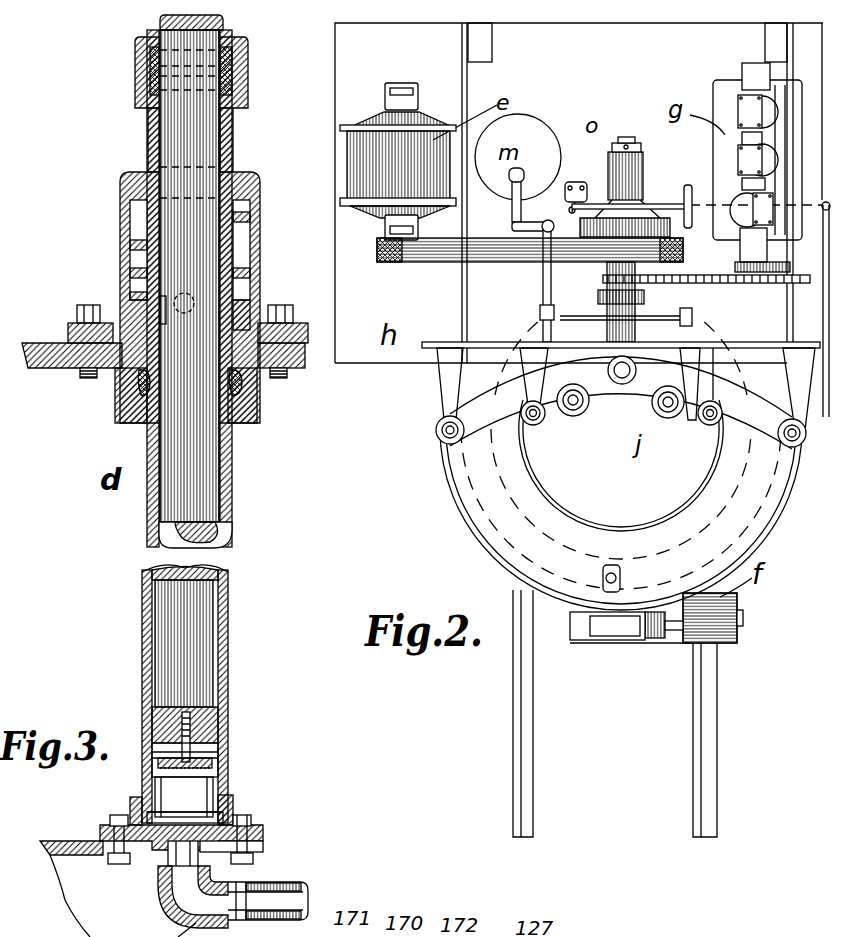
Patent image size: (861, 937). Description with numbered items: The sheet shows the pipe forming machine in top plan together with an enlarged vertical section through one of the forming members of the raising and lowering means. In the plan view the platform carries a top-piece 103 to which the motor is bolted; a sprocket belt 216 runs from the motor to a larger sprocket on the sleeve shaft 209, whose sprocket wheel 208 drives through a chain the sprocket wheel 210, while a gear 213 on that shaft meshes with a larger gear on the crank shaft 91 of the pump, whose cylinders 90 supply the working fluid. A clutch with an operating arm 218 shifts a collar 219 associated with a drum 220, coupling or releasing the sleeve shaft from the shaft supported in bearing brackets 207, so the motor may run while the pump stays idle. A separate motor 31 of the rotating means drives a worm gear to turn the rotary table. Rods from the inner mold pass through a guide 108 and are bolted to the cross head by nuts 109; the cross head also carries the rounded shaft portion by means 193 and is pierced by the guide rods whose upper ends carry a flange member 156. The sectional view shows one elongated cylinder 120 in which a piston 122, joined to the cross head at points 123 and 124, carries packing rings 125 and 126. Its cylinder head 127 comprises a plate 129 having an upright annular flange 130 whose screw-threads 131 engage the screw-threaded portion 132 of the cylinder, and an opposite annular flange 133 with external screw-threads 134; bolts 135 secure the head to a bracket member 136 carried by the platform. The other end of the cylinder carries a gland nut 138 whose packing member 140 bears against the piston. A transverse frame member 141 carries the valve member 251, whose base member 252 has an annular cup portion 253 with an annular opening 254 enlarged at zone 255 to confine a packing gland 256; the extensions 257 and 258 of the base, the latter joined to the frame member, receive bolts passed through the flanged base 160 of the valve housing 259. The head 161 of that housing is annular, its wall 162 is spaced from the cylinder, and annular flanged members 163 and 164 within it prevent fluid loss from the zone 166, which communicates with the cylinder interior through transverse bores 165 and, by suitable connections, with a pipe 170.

In FIG. 2, the top-piece 103 is at (395, 48).
In FIG. 2, the sprocket belt 216 is at (447, 256).
In FIG. 2, the drum 220 is at (560, 192).
In FIG. 2, the sprocket wheel 208 is at (553, 298).
In FIG. 2, the collar 219 is at (603, 205).
In FIG. 2, the operating arm 218 is at (648, 210).
In FIG. 2, the bearing brackets 207 is at (740, 155).
In FIG. 2, the crank shaft 91 is at (740, 97).
In FIG. 2, the cylinders 90 is at (740, 195).
In FIG. 2, the gear 213 is at (768, 262).
In FIG. 2, the pipe 170 is at (758, 292).
In FIG. 2, the sprocket wheel 210 is at (757, 283).
In FIG. 2, the sleeve shaft 209 is at (640, 308).
In FIG. 2, the guide 108 is at (613, 357).
In FIG. 2, the flange member 156 is at (455, 440).
In FIG. 2, the nuts 109 is at (540, 426).
In FIG. 2, the piston joint 124 is at (578, 417).
In FIG. 2, the carrying means 193 is at (617, 385).
In FIG. 2, the piston joint 123 is at (670, 418).
In FIG. 2, the transverse frame member 141 is at (608, 585).
In FIG. 2, the motor 31 is at (730, 632).
In FIG. 3, the head 161 is at (240, 172).
In FIG. 3, the gland nut 138 is at (243, 50).
In FIG. 3, the packing member 140 is at (230, 70).
In FIG. 3, the extension 258 is at (45, 345).
In FIG. 3, the packing gland 256 is at (140, 385).
In FIG. 3, the annular cup portion 253 is at (235, 412).
In FIG. 3, the annular opening 254 is at (235, 440).
In FIG. 3, the wall 162 is at (250, 262).
In FIG. 3, the valve housing 259 is at (252, 222).
In FIG. 3, the valve member 251 is at (252, 290).
In FIG. 3, the annular flanged member 163 is at (134, 248).
In FIG. 3, the annular flanged member 164 is at (134, 278).
In FIG. 3, the transverse bores 165 is at (150, 305).
In FIG. 3, the zone 166 is at (240, 316).
In FIG. 3, the flanged base 160 is at (288, 323).
In FIG. 3, the extension 257 is at (300, 362).
In FIG. 3, the enlarged zone 255 is at (140, 375).
In FIG. 3, the base member 252 is at (258, 380).
In FIG. 3, the cylinder 120 is at (230, 608).
In FIG. 3, the piston 122 is at (185, 665).
In FIG. 3, the packing ring 126 is at (228, 735).
In FIG. 3, the packing ring 125 is at (225, 760).
In FIG. 3, the upright annular flange 130 is at (232, 800).
In FIG. 3, the screw-threaded portion 132 is at (140, 800).
In FIG. 3, the screw-threads 131 is at (135, 808).
In FIG. 3, the cylinder head 127 is at (235, 820).
In FIG. 3, the bracket member 136 is at (75, 855).
In FIG. 3, the bolts 135 is at (258, 843).
In FIG. 3, the plate 129 is at (265, 830).
In FIG. 3, the annular flange 133 is at (160, 856).
In FIG. 3, the screw-threads 134 is at (178, 870).